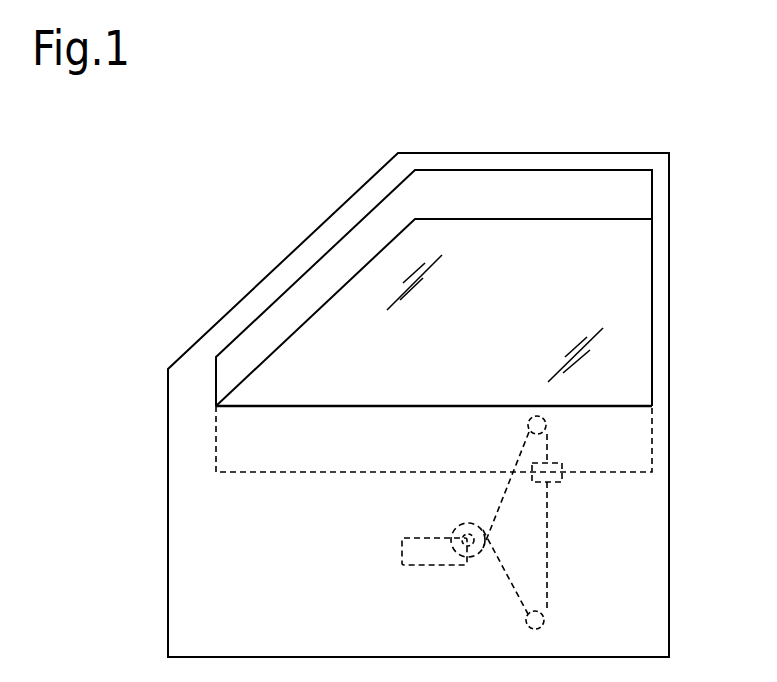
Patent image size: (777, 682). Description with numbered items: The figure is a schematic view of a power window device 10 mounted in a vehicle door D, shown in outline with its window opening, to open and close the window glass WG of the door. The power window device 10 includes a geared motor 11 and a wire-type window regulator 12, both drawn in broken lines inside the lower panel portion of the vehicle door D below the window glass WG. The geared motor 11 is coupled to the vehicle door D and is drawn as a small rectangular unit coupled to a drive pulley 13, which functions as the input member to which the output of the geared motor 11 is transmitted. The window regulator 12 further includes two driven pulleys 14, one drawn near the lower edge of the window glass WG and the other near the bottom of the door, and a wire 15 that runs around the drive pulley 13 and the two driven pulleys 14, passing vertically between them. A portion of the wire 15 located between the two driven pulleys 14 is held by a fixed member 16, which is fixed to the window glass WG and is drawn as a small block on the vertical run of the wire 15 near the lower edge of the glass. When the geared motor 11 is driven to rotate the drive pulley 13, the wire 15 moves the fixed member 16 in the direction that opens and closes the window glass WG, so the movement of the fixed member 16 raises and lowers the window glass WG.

The vehicle door D is at (670, 410).
The window glass WG is at (641, 275).
The power window device 10 is at (343, 513).
The geared motor 11 is at (400, 550).
The window regulator 12 is at (552, 584).
The drive pulley 13 is at (465, 521).
The driven pulleys 14 is at (528, 424).
The wire 15 is at (548, 550).
The fixed member 16 is at (556, 483).